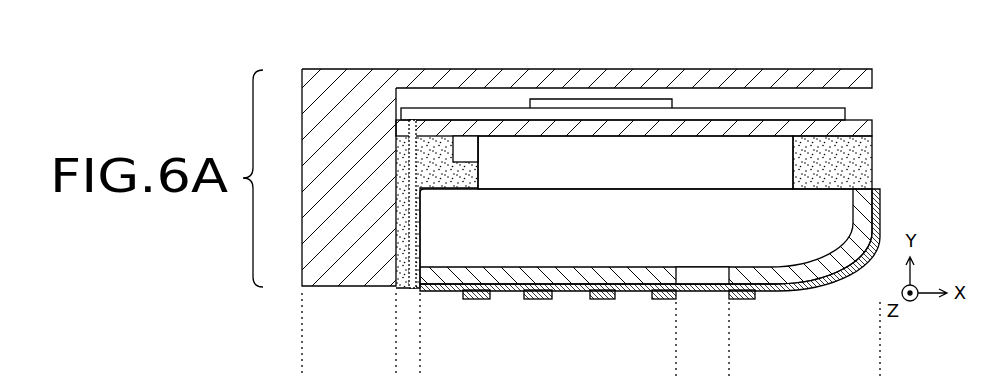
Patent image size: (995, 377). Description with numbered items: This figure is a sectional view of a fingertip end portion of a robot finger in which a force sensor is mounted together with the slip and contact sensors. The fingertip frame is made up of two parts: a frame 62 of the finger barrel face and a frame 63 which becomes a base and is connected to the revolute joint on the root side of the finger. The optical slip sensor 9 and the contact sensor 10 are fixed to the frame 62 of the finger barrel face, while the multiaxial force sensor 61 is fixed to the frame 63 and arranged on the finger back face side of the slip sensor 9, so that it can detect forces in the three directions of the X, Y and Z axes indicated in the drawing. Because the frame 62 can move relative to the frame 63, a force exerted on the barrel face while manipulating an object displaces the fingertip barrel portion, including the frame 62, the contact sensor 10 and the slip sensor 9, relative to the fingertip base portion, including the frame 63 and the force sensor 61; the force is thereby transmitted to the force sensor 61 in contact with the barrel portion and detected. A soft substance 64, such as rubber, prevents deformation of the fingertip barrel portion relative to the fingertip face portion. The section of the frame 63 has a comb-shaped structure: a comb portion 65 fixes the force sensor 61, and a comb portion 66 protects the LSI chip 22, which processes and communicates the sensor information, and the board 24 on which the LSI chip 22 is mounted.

The optical slip sensor module 9 is at (565, 249).
The contact sensor module 10 is at (882, 199).
The LSI chip 22 is at (578, 104).
The board 24 is at (803, 116).
The force sensor 61 is at (718, 157).
The frame of the finger barrel face 62 is at (498, 270).
The frame which becomes a base 63 is at (318, 209).
The soft substance 64 is at (433, 152).
The comb portion for fixing the force sensor 65 is at (866, 128).
The comb portion for protecting the LSI chip and board 66 is at (874, 78).